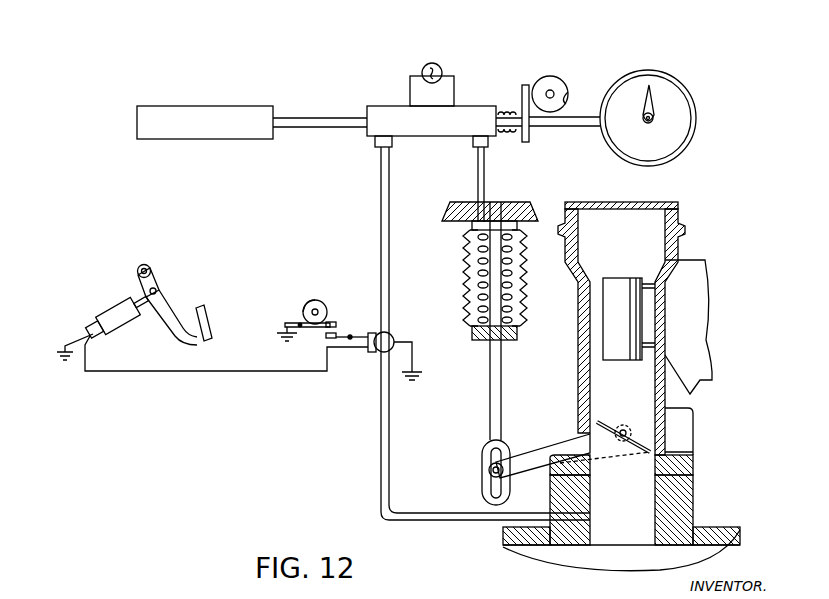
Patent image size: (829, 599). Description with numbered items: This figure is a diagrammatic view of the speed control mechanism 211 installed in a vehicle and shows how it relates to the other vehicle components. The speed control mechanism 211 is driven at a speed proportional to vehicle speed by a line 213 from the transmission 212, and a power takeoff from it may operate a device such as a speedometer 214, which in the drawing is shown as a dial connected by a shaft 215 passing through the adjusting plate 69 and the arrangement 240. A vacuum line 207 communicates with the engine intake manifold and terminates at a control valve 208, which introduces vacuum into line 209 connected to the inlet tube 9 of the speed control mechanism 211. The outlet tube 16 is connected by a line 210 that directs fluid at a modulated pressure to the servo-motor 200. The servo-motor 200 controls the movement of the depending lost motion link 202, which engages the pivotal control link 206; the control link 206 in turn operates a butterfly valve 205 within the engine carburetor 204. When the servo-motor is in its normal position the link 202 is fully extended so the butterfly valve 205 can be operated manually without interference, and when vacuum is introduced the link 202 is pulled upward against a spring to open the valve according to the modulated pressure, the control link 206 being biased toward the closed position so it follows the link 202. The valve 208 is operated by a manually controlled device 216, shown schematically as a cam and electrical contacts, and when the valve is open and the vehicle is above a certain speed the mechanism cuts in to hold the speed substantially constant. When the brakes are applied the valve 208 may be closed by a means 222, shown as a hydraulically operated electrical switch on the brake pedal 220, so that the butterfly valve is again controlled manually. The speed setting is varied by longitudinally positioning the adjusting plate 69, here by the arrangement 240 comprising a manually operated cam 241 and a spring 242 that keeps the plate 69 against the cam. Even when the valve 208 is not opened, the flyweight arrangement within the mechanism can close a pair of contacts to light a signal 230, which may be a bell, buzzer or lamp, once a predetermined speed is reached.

The inlet tube 9 is at (378, 147).
The outlet tube 16 is at (471, 147).
The adjusting plate 69 is at (527, 85).
The servo-motor 200 is at (463, 256).
The lost motion link 202 is at (482, 443).
The engine carburetor 204 is at (693, 437).
The butterfly valve 205 is at (650, 454).
The control link 206 is at (542, 445).
The vacuum line 207 is at (380, 495).
The control valve 208 is at (381, 353).
The line 209 is at (380, 247).
The line 210 is at (486, 168).
The speed control mechanism 211 is at (470, 105).
The transmission 212 is at (178, 106).
The line 213 is at (300, 115).
The speedometer 214 is at (700, 113).
The indicator shaft 215 is at (580, 128).
The manually controlled device 216 is at (290, 323).
The accelerator pedal 220 is at (153, 268).
The means 222 is at (100, 310).
The signal 230 is at (428, 62).
The arrangement 240 is at (560, 72).
The cam 241 is at (568, 92).
The coupling spring 242 is at (508, 100).